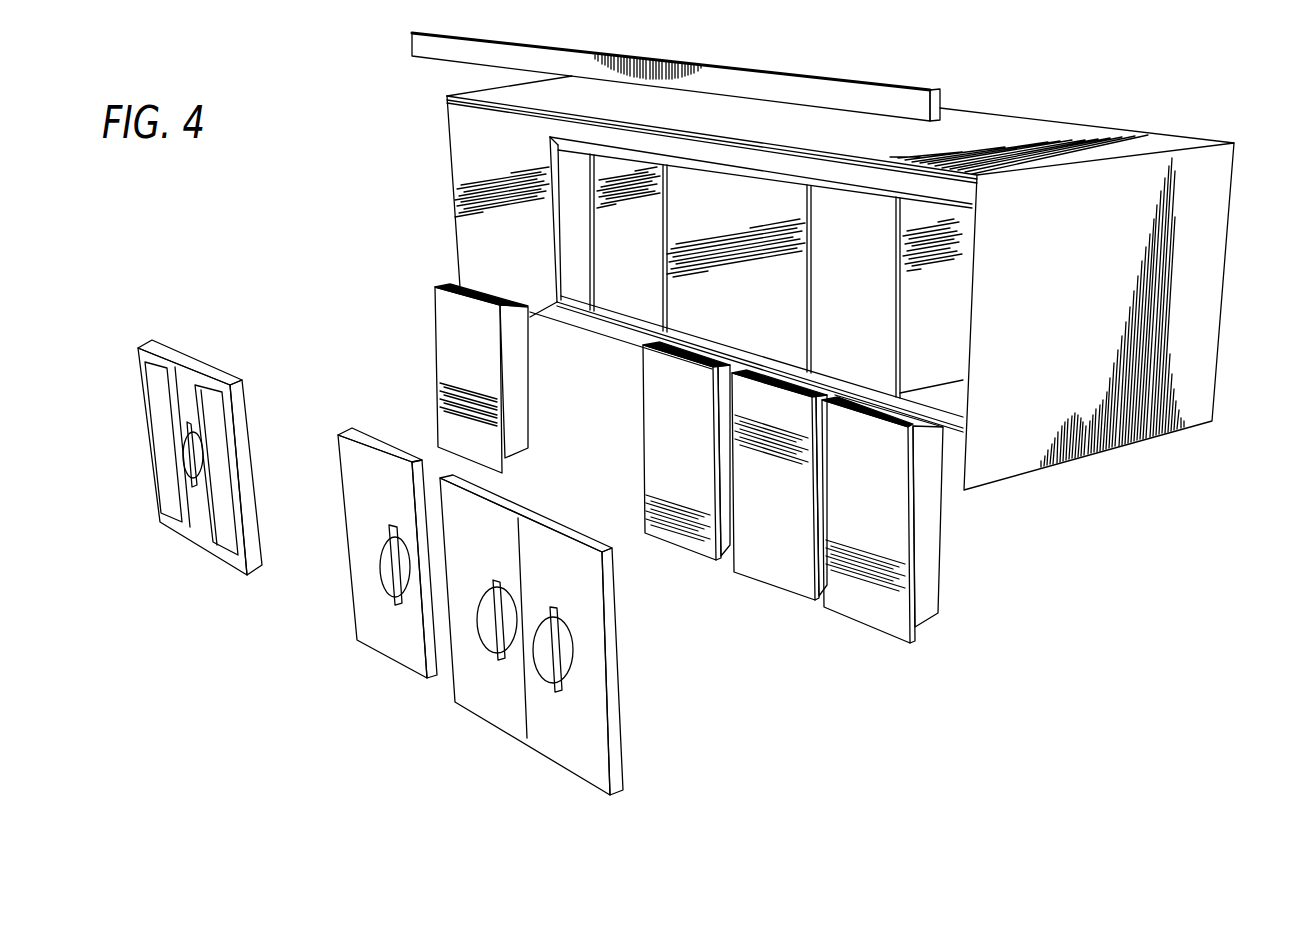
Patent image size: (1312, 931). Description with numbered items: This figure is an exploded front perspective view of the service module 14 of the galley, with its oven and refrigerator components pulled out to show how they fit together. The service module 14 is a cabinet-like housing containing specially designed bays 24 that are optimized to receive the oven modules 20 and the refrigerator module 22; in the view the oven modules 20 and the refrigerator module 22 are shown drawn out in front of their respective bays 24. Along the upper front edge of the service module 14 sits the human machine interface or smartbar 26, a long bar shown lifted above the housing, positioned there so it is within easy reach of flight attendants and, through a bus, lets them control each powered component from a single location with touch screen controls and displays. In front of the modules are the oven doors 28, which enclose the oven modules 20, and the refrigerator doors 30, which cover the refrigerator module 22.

The service module 14 is at (1223, 286).
The oven modules 20 is at (693, 532).
The refrigerator module 22 is at (453, 337).
The bays 24 is at (642, 315).
The human machine interface (smartbar) 26 is at (423, 45).
The oven doors 28 is at (395, 642).
The refrigerator doors 30 is at (177, 498).